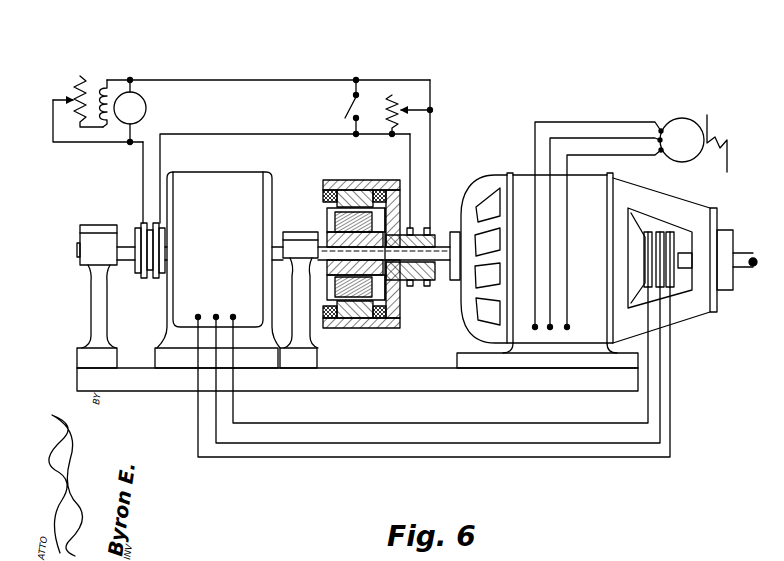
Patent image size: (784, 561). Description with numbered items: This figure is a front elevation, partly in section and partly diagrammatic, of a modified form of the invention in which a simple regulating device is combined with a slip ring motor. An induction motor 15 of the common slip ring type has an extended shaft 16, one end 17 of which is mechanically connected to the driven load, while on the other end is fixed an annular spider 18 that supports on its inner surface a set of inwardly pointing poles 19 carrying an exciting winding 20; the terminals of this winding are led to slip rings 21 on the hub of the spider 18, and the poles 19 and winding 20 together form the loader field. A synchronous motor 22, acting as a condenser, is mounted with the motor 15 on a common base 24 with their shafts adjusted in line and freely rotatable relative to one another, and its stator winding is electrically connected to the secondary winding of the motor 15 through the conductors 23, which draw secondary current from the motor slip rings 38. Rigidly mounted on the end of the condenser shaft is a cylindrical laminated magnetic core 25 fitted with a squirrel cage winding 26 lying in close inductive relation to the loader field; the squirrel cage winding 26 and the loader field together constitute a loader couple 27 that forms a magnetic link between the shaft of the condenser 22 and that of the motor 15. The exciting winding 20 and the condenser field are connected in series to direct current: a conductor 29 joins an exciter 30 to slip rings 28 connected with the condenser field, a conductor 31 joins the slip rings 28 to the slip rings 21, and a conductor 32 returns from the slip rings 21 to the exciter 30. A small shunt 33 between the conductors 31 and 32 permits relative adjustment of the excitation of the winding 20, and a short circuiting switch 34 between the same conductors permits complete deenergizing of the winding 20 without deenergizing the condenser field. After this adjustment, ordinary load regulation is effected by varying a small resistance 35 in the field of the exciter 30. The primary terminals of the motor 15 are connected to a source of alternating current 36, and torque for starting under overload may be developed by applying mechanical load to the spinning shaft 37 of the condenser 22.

The induction motor 15 is at (520, 175).
The extended shaft 16 is at (440, 262).
The shaft end 17 is at (745, 254).
The annular spider 18 is at (372, 186).
The inwardly pointing poles 19 is at (346, 188).
The exciting winding 20 is at (325, 196).
The slip rings 21 is at (430, 228).
The synchronous motor 22 is at (236, 172).
The conductors 23 is at (464, 458).
The common base 24 is at (402, 386).
The cylindrical laminated magnetic core 25 is at (330, 238).
The squirrel cage winding 26 is at (335, 216).
The loader couple 27 is at (347, 333).
The slip rings 28 is at (157, 279).
The conductor 29 is at (143, 171).
The exciter 30 is at (141, 102).
The conductor 31 is at (160, 164).
The conductor 32 is at (262, 80).
The shunt 33 is at (408, 110).
The short circuiting switch 34 is at (348, 104).
The resistance 35 is at (83, 75).
The source of alternating current 36 is at (680, 118).
The condenser shaft 37 is at (126, 247).
The motor slip rings 38 is at (670, 232).